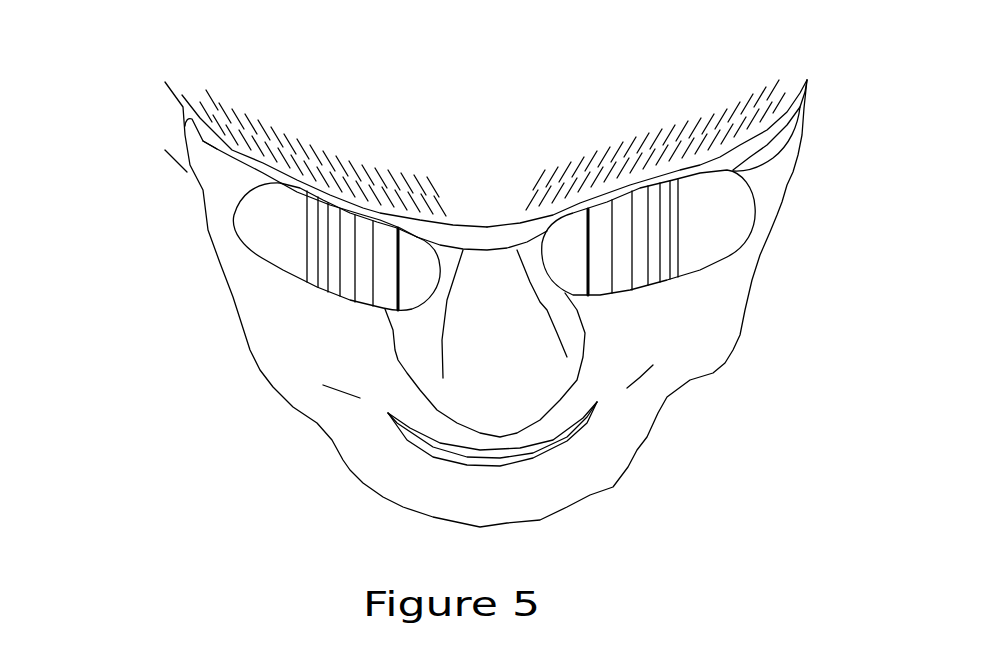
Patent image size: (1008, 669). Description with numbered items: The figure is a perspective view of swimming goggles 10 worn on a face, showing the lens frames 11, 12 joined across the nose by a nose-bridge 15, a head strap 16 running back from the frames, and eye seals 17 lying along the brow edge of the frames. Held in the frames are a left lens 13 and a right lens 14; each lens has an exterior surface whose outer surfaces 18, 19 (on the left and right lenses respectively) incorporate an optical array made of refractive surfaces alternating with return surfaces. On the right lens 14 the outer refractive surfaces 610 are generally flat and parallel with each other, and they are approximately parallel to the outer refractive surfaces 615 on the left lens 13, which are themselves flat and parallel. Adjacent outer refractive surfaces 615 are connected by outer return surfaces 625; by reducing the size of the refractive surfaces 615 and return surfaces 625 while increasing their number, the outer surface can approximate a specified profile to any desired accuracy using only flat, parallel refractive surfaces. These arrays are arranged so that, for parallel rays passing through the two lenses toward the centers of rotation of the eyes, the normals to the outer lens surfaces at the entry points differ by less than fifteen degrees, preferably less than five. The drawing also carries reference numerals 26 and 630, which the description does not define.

The swimming goggles 10 is at (228, 232).
The lens frame 11 is at (737, 146).
The lens frame 12 is at (229, 153).
The left lens 13 is at (693, 231).
The right lens 14 is at (276, 272).
The nose-bridge 15 is at (484, 222).
The head strap 16 is at (163, 160).
The eye seals 17 is at (681, 163).
The outer surface 18 is at (762, 190).
The outer surface 19 is at (224, 208).
The face of wearer 26 is at (624, 338).
The outer refractive surfaces 610 is at (418, 278).
The outer refractive surfaces 615 is at (603, 258).
The outer return surfaces 625 is at (592, 282).
The left lens vent slots 630 is at (371, 295).